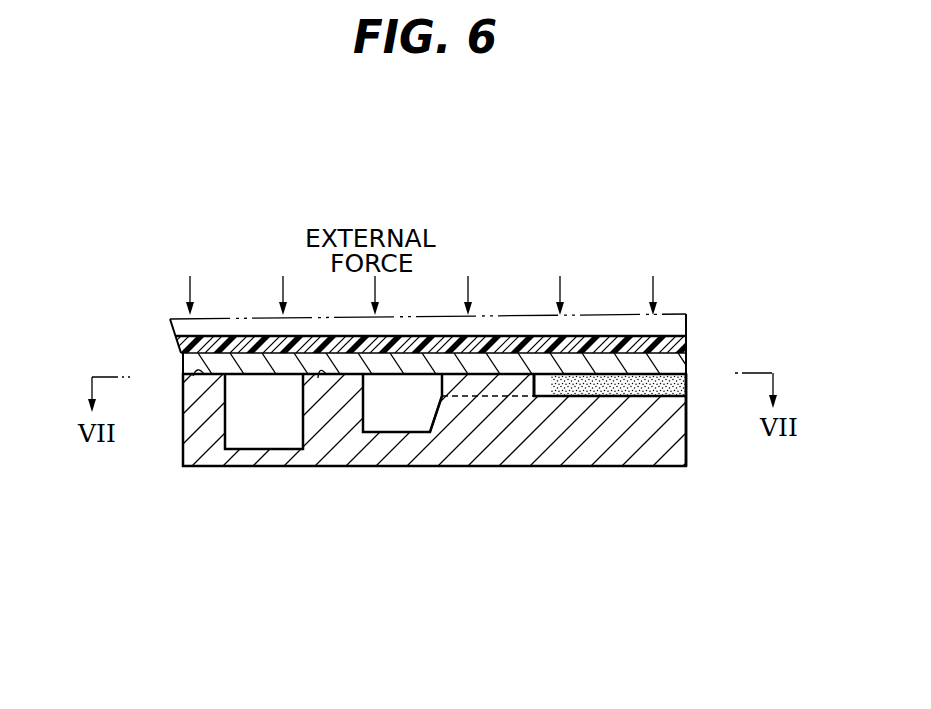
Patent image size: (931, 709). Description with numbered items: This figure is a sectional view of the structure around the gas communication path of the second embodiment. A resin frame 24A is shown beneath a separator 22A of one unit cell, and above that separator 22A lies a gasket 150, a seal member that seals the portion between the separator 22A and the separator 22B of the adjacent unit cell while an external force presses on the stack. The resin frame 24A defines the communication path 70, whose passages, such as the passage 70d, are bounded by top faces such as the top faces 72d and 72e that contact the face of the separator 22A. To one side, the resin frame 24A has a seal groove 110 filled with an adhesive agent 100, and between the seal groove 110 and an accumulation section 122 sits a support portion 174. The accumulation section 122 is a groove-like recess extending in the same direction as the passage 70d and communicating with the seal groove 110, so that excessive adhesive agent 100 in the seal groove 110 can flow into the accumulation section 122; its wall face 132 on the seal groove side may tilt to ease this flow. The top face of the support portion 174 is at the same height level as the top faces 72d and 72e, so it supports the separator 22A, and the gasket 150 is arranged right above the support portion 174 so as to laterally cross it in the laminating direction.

The separator 22B is at (668, 322).
The gasket 150 is at (687, 342).
The separator 22A is at (687, 362).
The adhesive agent 100 is at (688, 384).
The resin frame 24A is at (677, 457).
The communication path 70 is at (259, 560).
The passage 70d is at (268, 437).
The top face 72d is at (193, 378).
The top face 72e is at (318, 380).
The accumulation section 122 is at (392, 423).
The wall face 132 is at (434, 412).
The support portion 174 is at (488, 388).
The seal groove 110 is at (542, 390).